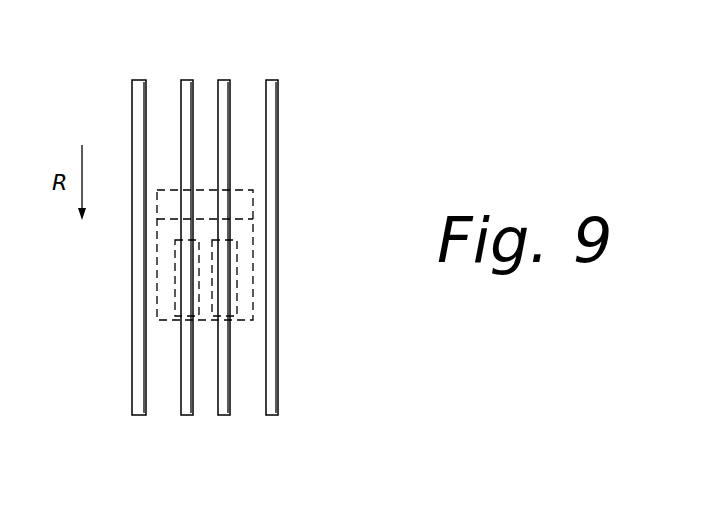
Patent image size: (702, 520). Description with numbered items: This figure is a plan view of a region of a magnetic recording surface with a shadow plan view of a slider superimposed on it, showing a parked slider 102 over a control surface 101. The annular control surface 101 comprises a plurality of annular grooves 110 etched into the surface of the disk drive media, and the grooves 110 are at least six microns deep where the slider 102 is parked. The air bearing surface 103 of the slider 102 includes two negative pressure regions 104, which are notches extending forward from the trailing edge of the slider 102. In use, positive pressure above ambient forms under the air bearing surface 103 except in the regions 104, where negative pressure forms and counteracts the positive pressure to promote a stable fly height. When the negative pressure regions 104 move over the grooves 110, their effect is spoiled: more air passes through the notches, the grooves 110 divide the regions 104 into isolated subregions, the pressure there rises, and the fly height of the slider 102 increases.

The control surface 101 is at (314, 116).
The annular grooves 110 is at (300, 58).
The slider 102 is at (252, 288).
The air bearing surface 103 is at (165, 240).
The negative pressure regions 104 is at (177, 300).